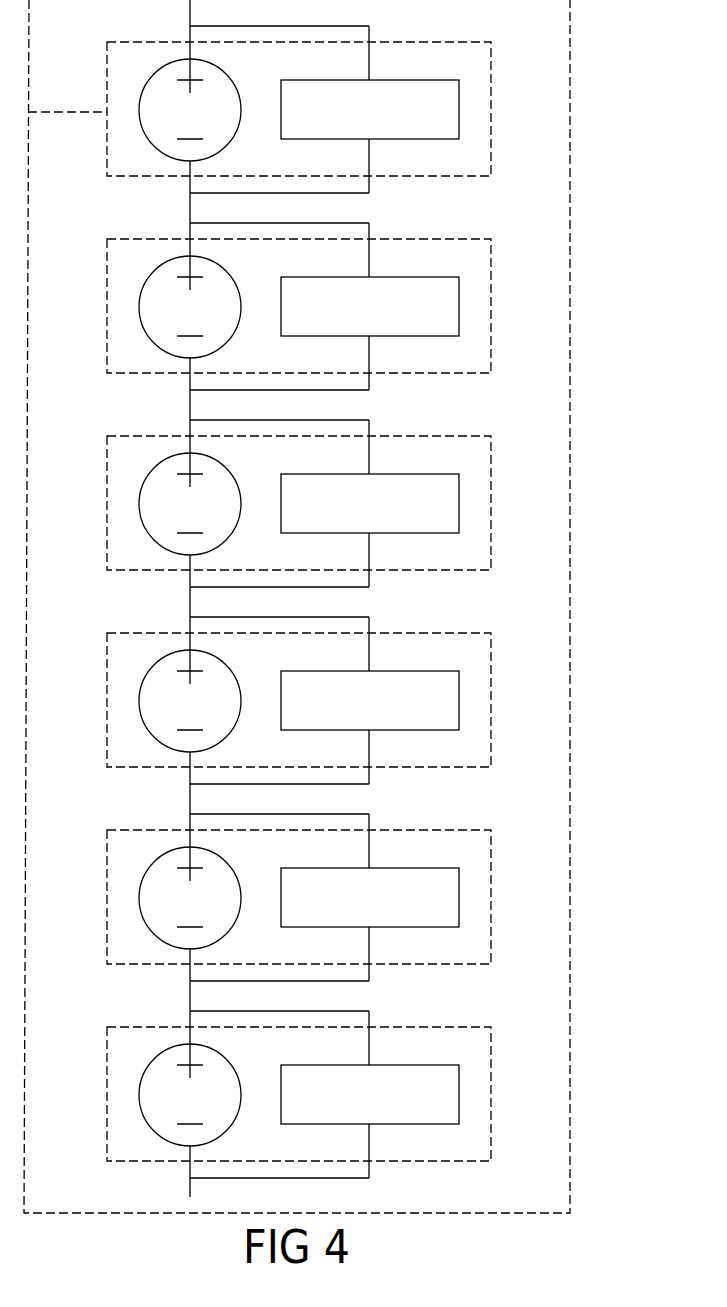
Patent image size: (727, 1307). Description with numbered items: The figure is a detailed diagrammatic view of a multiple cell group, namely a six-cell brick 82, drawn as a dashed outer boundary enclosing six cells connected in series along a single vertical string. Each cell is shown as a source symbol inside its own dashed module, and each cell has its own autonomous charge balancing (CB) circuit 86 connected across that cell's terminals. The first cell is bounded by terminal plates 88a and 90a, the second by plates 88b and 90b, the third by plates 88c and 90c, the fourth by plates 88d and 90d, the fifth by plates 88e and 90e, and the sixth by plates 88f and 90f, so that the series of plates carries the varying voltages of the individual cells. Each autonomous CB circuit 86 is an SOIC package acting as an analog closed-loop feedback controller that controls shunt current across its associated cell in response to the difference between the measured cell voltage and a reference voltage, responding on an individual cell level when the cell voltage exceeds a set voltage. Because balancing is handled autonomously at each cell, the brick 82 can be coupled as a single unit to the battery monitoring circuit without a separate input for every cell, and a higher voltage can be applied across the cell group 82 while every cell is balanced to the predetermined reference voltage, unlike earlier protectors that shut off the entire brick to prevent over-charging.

The six-cell brick 82 is at (570, 206).
The autonomous charge balancing circuit 86 is at (407, 1065).
The cell terminal plate 88a is at (190, 33).
The cell terminal plate 88b is at (190, 230).
The cell terminal plate 88c is at (190, 427).
The cell terminal plate 88d is at (190, 624).
The cell terminal plate 88e is at (190, 821).
The cell terminal plate 88f is at (190, 1018).
The cell terminal plate 90a is at (190, 185).
The cell terminal plate 90b is at (190, 382).
The cell terminal plate 90c is at (190, 579).
The cell terminal plate 90d is at (190, 776).
The cell terminal plate 90e is at (190, 973).
The cell terminal plate 90f is at (190, 1170).